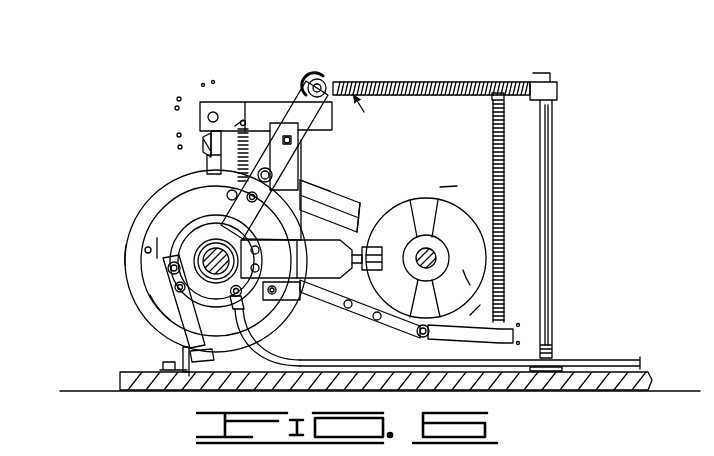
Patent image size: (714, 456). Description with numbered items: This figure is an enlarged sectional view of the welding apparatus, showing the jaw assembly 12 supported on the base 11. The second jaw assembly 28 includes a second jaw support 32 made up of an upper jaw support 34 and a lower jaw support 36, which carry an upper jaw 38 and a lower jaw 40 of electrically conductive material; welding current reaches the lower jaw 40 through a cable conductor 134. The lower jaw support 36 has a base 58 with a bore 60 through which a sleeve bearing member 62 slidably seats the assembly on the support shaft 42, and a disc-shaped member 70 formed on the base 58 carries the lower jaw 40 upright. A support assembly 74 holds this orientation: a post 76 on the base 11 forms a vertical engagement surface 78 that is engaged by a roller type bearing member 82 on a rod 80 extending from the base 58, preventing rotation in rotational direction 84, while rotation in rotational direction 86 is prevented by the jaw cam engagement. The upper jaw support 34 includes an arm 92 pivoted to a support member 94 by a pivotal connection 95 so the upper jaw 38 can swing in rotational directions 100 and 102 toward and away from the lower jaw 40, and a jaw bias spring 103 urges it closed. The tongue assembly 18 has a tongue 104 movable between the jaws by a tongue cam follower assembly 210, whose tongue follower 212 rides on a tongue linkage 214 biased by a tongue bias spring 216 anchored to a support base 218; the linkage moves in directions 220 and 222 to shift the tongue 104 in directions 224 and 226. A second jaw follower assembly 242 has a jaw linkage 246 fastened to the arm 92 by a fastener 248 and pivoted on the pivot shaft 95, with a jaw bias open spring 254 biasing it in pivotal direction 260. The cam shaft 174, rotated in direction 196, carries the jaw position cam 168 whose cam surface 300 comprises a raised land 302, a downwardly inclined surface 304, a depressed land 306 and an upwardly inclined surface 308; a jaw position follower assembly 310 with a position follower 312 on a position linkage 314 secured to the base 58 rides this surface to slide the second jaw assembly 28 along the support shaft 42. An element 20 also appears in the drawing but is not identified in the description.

The base 11 is at (595, 380).
The jaw assembly 12 is at (203, 80).
The tongue assembly 18 is at (351, 190).
The connecting bar 20 is at (363, 226).
The second jaw assembly 28 is at (235, 122).
The second jaw support 32 is at (150, 295).
The upper jaw support 34 is at (212, 78).
The lower jaw support 36 is at (143, 197).
The upper jaw 38 is at (213, 131).
The lower jaw 40 is at (246, 124).
The support shaft 42 is at (230, 263).
The base 58 is at (180, 228).
The bore 60 is at (224, 283).
The sleeve bearing member 62 is at (203, 264).
The disc-shaped member 70 is at (137, 233).
The support assembly 74 is at (217, 356).
The post 76 is at (163, 365).
The engagement surface 78 is at (193, 372).
The rod 80 is at (187, 312).
The roller type bearing member 82 is at (185, 353).
The rotational direction 84 is at (160, 263).
The rotational direction 86 is at (143, 252).
The arm 92 is at (280, 110).
The support member 94 is at (289, 162).
The pivotal connection 95 is at (297, 100).
The rotational direction 100 is at (178, 100).
The rotational direction 102 is at (176, 109).
The jaw bias spring 103 is at (258, 149).
The tongue 104 is at (207, 161).
The cable conductor 134 is at (623, 360).
The jaw position cam 168 is at (457, 222).
The cam shaft 174 is at (433, 258).
The direction 196 is at (442, 187).
The tongue cam follower assembly 210 is at (358, 324).
The tongue follower 212 is at (433, 341).
The tongue linkage 214 is at (481, 306).
The tongue bias spring 216 is at (503, 156).
The support base 218 is at (543, 128).
The direction 220 is at (519, 341).
The direction 222 is at (519, 323).
The direction 224 is at (178, 135).
The direction 226 is at (179, 148).
The second jaw follower assembly 242 is at (231, 203).
The jaw linkage 246 is at (378, 185).
The fastener 248 is at (323, 79).
The jaw bias open spring 254 is at (432, 84).
The pivotal direction 260 is at (340, 75).
The cam surface 300 is at (498, 218).
The raised land 302 is at (397, 213).
The downwardly inclined surface 304 is at (418, 200).
The depressed land 306 is at (463, 270).
The upwardly inclined surface 308 is at (415, 334).
The jaw position follower assembly 310 is at (319, 225).
The position follower 312 is at (378, 272).
The position linkage 314 is at (328, 268).